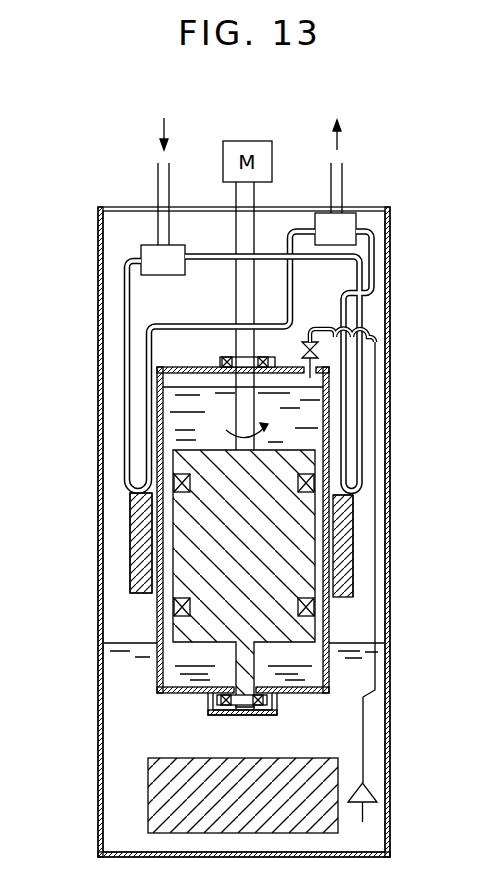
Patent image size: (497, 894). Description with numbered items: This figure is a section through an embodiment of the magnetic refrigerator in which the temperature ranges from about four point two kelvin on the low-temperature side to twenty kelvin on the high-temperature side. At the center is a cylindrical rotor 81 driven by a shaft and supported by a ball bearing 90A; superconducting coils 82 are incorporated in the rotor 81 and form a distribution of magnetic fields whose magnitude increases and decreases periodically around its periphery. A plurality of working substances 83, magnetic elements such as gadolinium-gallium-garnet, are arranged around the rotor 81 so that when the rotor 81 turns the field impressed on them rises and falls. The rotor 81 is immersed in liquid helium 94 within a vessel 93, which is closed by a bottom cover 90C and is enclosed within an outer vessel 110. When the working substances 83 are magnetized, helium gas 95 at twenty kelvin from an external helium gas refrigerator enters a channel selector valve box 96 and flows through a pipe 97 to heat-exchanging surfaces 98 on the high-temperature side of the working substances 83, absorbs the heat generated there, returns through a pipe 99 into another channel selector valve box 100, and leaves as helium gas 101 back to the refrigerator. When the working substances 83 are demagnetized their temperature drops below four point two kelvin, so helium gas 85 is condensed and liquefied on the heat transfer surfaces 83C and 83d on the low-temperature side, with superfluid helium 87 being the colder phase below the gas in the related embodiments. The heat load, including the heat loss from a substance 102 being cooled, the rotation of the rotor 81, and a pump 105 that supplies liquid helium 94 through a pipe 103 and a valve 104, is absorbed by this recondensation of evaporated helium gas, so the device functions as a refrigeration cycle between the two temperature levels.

The rotor 81 is at (178, 582).
The superconducting coils 82 is at (173, 611).
The working substances 83 is at (353, 538).
The heat transfer surface on the low-temperature side 83C is at (340, 558).
The heat transfer surface on the low-temperature side 83d is at (353, 578).
The helium gas 85 is at (360, 623).
The superfluid helium 87 is at (107, 753).
The ball bearing 90A is at (218, 361).
The bottom cover 90C is at (208, 712).
The vessel 93 is at (329, 458).
The liquid helium 94 is at (315, 422).
The helium gas 95 is at (161, 133).
The channel selector valve box 96 is at (152, 256).
The pipe 97 is at (360, 316).
The heat-exchanging surfaces 98 is at (130, 505).
The pipe 99 is at (374, 272).
The channel selector valve box 100 is at (350, 229).
The helium gas 101 is at (344, 134).
The substance being cooled 102 is at (155, 808).
The pipe 103 is at (376, 417).
The valve 104 is at (320, 349).
The pump 105 is at (378, 802).
The outer vessel 110 is at (384, 689).